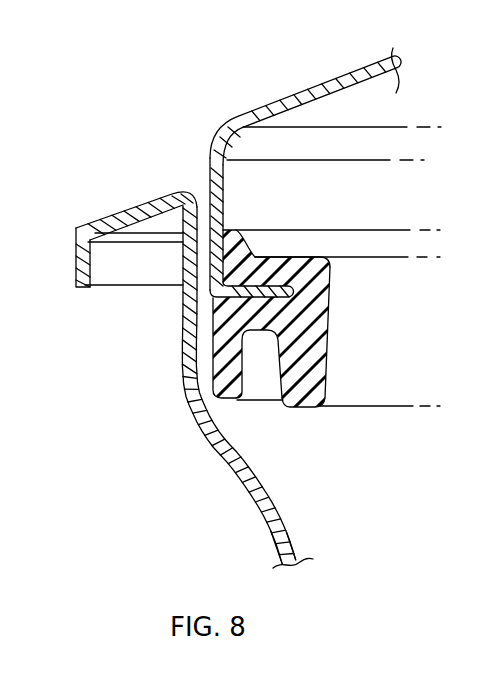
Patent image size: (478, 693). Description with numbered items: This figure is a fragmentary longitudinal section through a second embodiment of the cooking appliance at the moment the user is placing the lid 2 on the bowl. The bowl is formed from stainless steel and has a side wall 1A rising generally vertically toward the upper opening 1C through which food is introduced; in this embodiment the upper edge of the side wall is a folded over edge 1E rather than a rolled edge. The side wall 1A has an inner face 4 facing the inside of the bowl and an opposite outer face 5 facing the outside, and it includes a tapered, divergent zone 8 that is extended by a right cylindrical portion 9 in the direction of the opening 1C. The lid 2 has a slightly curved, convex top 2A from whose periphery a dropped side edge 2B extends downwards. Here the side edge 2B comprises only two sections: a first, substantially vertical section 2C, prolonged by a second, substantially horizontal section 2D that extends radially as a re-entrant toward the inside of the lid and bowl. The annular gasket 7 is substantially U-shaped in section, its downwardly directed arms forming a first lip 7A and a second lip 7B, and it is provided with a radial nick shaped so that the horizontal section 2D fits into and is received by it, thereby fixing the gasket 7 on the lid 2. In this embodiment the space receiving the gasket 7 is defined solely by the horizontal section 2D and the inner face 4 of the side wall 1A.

The lid 2 is at (299, 151).
The top 2A is at (285, 96).
The side edge 2B is at (225, 189).
The vertical section 2C is at (209, 213).
The horizontal section 2D is at (280, 275).
The gasket 7 is at (259, 309).
The first lip 7A is at (232, 372).
The second lip 7B is at (323, 381).
The upper opening 1C is at (200, 193).
The folded over edge 1E is at (80, 288).
The right cylindrical portion 9 is at (184, 348).
The outer face 5 is at (236, 473).
The side wall 1A is at (248, 474).
The zone 8 is at (262, 506).
The inner face 4 is at (285, 520).